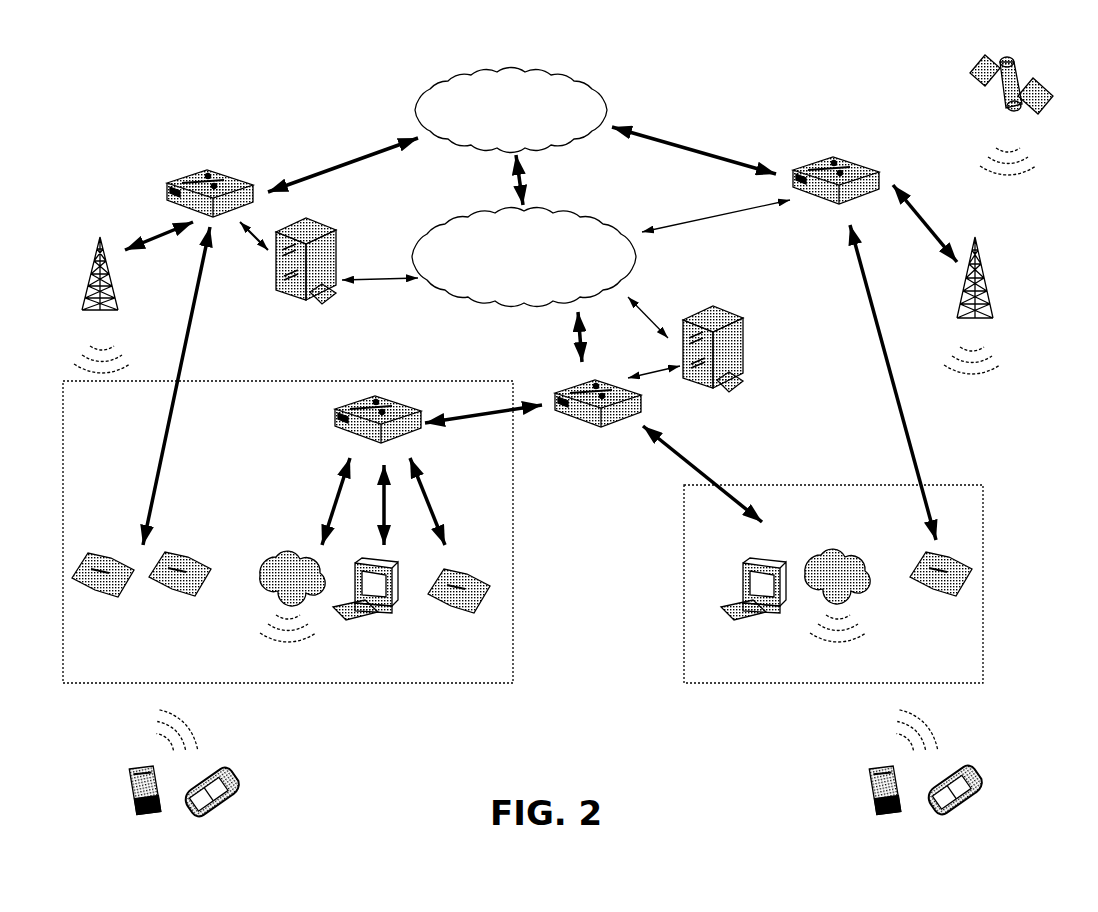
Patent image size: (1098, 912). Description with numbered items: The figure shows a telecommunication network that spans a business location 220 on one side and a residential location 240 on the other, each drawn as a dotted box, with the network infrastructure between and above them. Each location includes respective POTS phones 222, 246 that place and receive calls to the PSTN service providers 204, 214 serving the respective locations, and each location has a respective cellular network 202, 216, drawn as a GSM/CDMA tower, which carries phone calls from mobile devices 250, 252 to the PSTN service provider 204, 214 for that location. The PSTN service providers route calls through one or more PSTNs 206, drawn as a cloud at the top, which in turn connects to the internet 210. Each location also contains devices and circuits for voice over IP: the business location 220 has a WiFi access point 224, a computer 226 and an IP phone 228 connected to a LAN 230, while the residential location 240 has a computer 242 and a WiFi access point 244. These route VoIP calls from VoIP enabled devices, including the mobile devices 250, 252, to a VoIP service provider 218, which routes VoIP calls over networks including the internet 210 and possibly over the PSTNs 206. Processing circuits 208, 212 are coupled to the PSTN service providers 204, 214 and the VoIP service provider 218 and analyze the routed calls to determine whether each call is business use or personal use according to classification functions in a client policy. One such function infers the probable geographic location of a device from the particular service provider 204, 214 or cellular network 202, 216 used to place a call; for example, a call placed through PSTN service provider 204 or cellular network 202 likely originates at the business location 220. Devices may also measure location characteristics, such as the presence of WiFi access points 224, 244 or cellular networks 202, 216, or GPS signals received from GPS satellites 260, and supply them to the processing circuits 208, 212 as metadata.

The cellular network 202 is at (96, 236).
The PSTN service provider 204 is at (250, 180).
The PSTN 206 is at (443, 75).
The processing circuit 208 is at (312, 224).
The internet 210 is at (613, 218).
The processing circuit 212 is at (730, 304).
The PSTN service provider 214 is at (876, 166).
The cellular network 216 is at (978, 236).
The VoIP service provider 218 is at (642, 400).
The business location 220 is at (488, 380).
The POTS 222 is at (178, 532).
The WiFi access point 224 is at (298, 568).
The computer 226 is at (376, 570).
The IP phone 228 is at (454, 570).
The LAN 230 is at (424, 406).
The residential location 240 is at (970, 487).
The computer 242 is at (742, 550).
The WiFi access point 244 is at (822, 564).
The POTS 246 is at (950, 548).
The mobile device 250 is at (212, 750).
The mobile device 252 is at (955, 750).
The GPS satellite 260 is at (1024, 60).